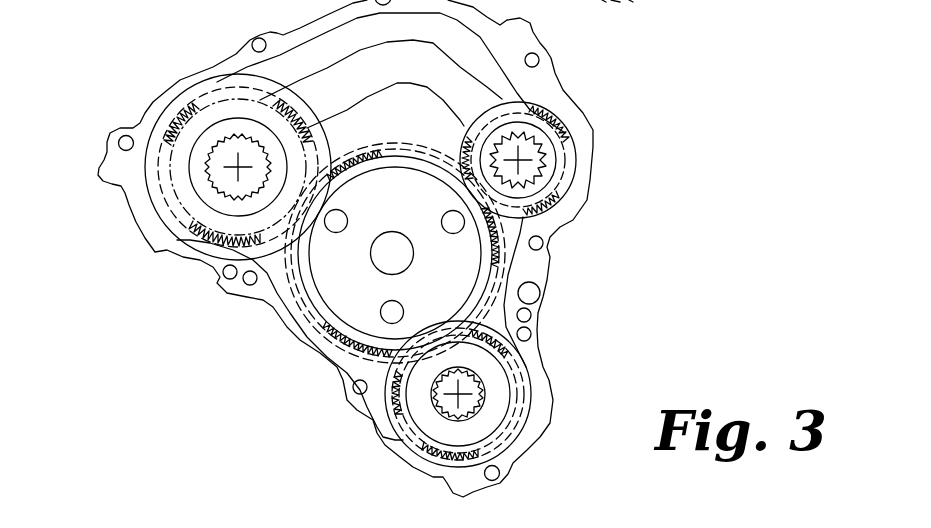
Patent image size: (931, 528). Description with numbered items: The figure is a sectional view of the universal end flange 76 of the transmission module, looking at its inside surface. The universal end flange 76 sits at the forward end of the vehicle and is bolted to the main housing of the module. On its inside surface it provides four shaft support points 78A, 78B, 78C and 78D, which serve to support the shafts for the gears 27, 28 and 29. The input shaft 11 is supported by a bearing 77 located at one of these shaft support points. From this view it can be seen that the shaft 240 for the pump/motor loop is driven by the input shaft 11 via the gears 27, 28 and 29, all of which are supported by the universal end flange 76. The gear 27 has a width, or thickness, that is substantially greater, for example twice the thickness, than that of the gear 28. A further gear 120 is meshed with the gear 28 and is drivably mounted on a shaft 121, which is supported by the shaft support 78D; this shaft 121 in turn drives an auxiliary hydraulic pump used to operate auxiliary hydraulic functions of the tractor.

The input shaft 11 is at (237, 167).
The gear 27 is at (180, 170).
The gear 28 is at (317, 290).
The gear 29 is at (522, 158).
The universal end flange 76 is at (538, 308).
The bearing 77 is at (225, 135).
The shaft support point 78A is at (208, 190).
The shaft support point 78B is at (367, 283).
The shaft support point 78C is at (552, 188).
The shaft support point 78D is at (500, 394).
The gear 120 is at (493, 420).
The shaft 121 is at (457, 400).
The shaft 240 is at (532, 160).